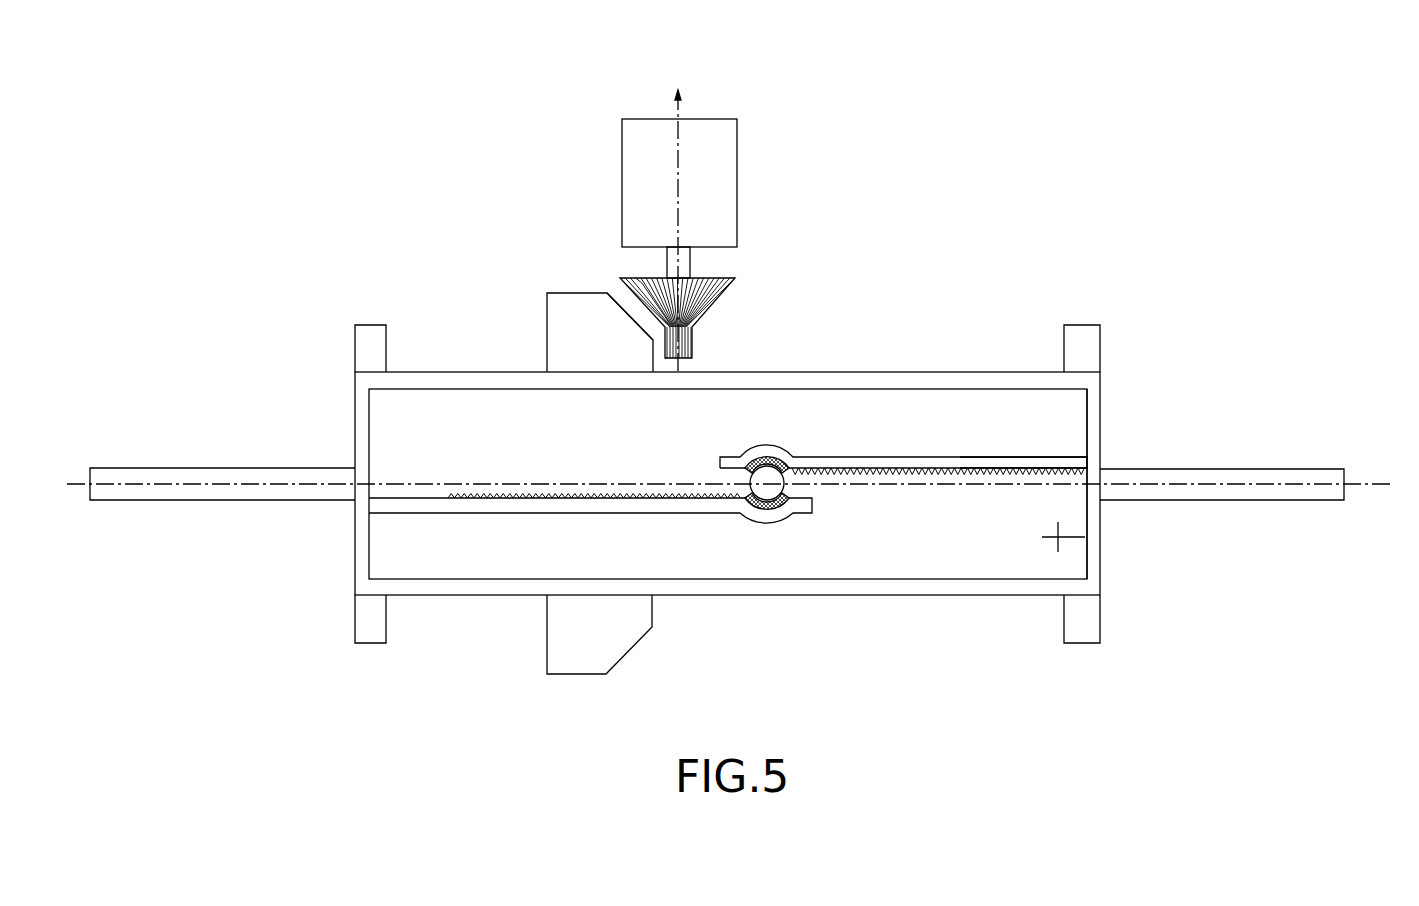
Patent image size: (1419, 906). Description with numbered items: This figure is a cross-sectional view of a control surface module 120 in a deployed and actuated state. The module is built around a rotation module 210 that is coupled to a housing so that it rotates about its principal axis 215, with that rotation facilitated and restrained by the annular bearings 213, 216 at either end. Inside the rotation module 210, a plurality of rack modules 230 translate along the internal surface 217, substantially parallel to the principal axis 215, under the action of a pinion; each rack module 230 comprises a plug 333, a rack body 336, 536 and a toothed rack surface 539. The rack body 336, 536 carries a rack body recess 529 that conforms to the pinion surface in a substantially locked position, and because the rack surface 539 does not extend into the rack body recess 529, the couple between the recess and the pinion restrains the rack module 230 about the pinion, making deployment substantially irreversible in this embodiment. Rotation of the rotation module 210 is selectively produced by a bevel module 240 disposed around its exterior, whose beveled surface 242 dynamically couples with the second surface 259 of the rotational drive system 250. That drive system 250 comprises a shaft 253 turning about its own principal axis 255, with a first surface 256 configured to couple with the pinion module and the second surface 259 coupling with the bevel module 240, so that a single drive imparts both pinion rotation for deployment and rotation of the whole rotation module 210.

The control surface module 120 is at (1075, 130).
The rotation module 210 is at (928, 382).
The bearing 213 is at (1069, 325).
The principal axis 215 is at (1365, 484).
The bearing 216 is at (377, 323).
The internal surface 217 is at (1098, 537).
The rack module 230 is at (1292, 469).
The bevel module 240 is at (560, 293).
The beveled surface 242 is at (617, 303).
The rotational drive system 250 is at (737, 137).
The shaft 253 is at (690, 253).
The principal axis 255 is at (680, 103).
The first surface 256 is at (693, 345).
The second surface 259 is at (722, 282).
The plug 333 is at (1103, 572).
The rack body 336 is at (962, 462).
The rack body recess 529 is at (795, 456).
The rack body 536 is at (770, 518).
The rack surface 539 is at (1005, 470).